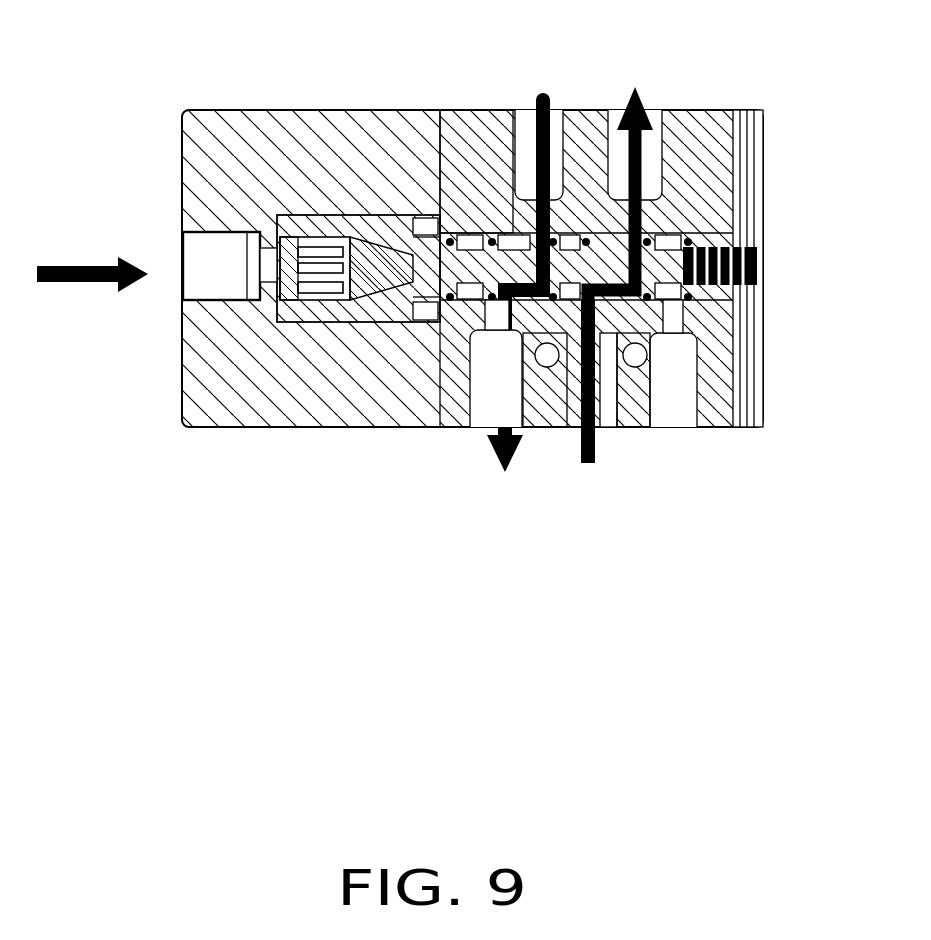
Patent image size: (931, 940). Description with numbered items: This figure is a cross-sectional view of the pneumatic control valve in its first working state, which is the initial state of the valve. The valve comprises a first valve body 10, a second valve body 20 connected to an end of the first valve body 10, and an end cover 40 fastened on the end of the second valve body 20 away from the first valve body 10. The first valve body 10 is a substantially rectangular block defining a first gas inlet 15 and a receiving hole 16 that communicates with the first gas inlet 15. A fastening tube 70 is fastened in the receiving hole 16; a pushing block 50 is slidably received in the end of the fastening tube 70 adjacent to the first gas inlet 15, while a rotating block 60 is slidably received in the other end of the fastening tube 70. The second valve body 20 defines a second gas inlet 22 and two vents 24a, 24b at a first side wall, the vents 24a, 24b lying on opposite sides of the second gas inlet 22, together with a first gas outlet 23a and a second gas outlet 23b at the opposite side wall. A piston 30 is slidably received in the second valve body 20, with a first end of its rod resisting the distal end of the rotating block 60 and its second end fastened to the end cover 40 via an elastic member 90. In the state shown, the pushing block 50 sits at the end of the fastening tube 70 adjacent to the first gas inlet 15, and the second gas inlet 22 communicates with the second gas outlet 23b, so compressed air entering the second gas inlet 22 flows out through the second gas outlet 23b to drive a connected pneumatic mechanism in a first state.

The first valve body 10 is at (337, 427).
The first gas inlet 15 is at (200, 260).
The receiving hole 16 is at (403, 427).
The second valve body 20 is at (703, 110).
The second gas inlet 22 is at (577, 400).
The first gas outlet 23a is at (528, 100).
The second gas outlet 23b is at (617, 125).
The vent 24a is at (480, 430).
The vent 24b is at (683, 400).
The piston 30 is at (462, 108).
The end cover 40 is at (757, 110).
The pushing block 50 is at (330, 217).
The rotating block 60 is at (377, 220).
The fastening tube 70 is at (280, 213).
The elastic member 90 is at (757, 248).